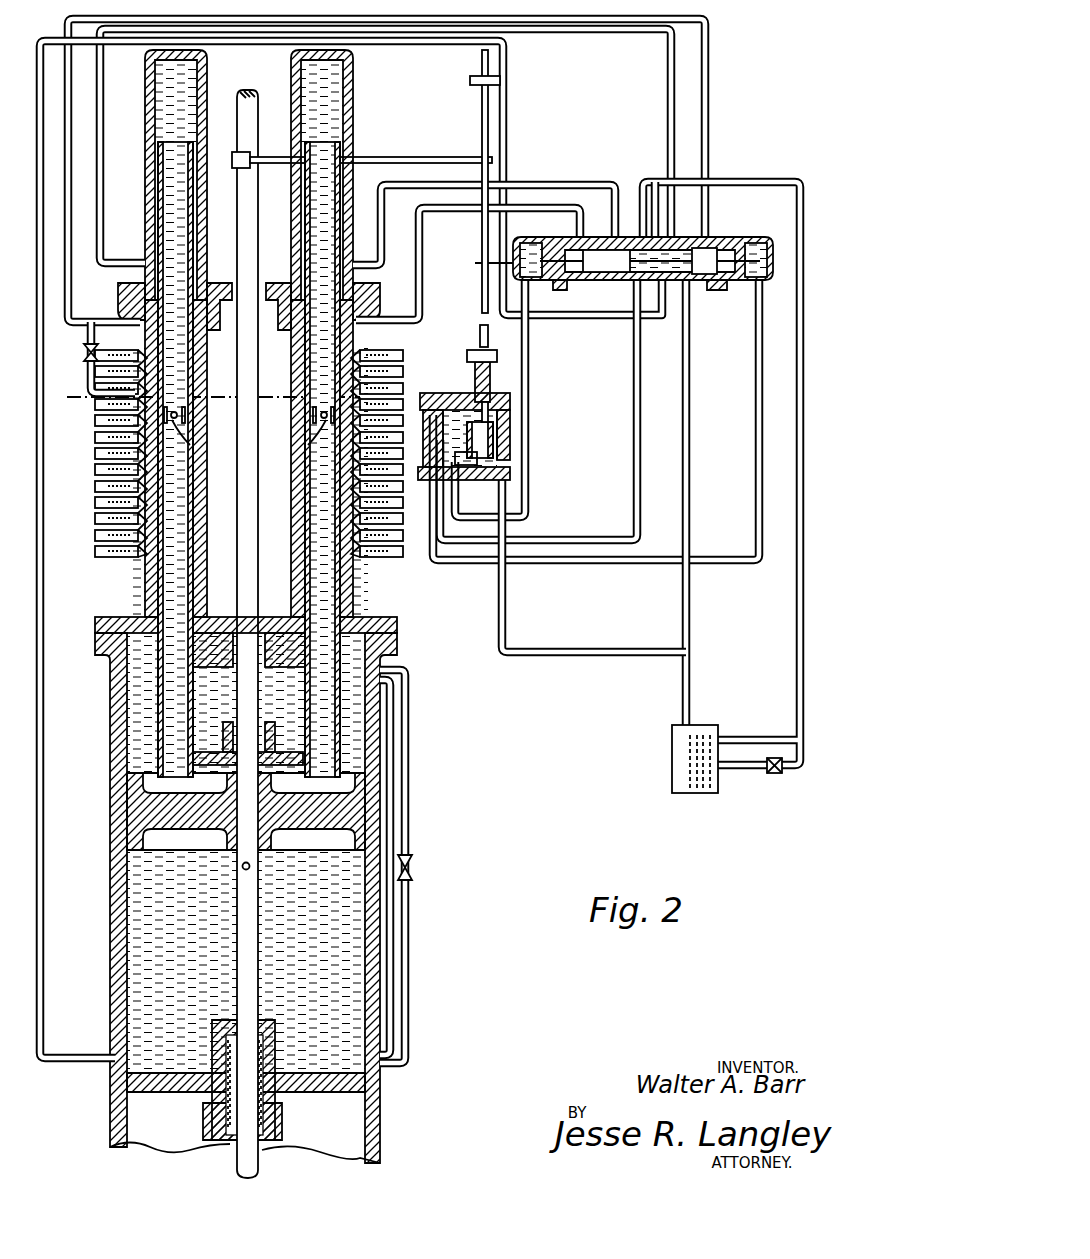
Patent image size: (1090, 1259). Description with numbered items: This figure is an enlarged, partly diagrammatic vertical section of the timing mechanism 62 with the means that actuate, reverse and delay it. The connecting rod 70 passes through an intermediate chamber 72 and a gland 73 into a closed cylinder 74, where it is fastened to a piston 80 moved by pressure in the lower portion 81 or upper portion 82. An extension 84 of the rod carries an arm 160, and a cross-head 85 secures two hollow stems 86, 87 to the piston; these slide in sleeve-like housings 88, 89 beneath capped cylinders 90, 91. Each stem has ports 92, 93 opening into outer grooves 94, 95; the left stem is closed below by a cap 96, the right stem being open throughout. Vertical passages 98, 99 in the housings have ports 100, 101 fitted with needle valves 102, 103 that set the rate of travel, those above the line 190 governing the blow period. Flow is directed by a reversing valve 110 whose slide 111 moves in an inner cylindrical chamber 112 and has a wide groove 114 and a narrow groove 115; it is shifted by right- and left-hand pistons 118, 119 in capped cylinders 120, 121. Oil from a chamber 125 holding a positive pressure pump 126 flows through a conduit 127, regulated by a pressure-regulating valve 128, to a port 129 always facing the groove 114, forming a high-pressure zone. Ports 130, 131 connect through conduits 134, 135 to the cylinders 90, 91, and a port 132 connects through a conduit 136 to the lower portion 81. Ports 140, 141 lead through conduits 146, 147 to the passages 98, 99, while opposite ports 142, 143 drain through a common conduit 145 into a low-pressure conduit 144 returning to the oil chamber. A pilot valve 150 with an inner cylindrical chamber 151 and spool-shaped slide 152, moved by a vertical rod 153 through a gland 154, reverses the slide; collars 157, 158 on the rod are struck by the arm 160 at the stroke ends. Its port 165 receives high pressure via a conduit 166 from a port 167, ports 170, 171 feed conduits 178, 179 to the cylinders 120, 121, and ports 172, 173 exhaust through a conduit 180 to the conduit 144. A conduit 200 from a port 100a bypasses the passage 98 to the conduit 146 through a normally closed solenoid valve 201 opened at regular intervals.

The timing mechanism 62 is at (227, 898).
The connecting rod 70 is at (240, 1168).
The intermediate chamber 72 is at (345, 1148).
The gland 73 is at (290, 1140).
The closed cylinder 74 is at (112, 940).
The piston 80 is at (365, 830).
The lower portion 81 is at (360, 915).
The upper portion 82 is at (303, 757).
The extension 84 is at (248, 98).
The cross-head 85 is at (275, 740).
The hollow stem 86 is at (192, 218).
The hollow stem 87 is at (302, 215).
The sleeve-like housing 88 is at (205, 522).
The sleeve-like housing 89 is at (295, 522).
The capped cylinder 90 is at (200, 112).
The capped cylinder 91 is at (297, 118).
The ports 92 is at (190, 445).
The ports 93 is at (308, 445).
The groove 94 is at (186, 413).
The groove 95 is at (311, 413).
The cap 96 is at (160, 762).
The vertical passage 98 is at (135, 592).
The vertical passage 99 is at (375, 606).
The ports 100 is at (150, 353).
The port 100a is at (148, 375).
The ports 101 is at (350, 353).
The needle valves 102 is at (95, 475).
The needle valves 103 is at (405, 555).
The reversing valve 110 is at (648, 274).
The slide 111 is at (760, 210).
The inner cylindrical chamber 112 is at (615, 230).
The wide groove 114 is at (706, 182).
The narrow groove 115 is at (672, 250).
The right-hand piston 118 is at (775, 270).
The left-hand piston 119 is at (535, 282).
The capped cylinder 120 is at (745, 255).
The capped cylinder 121 is at (475, 263).
The oil chamber 125 is at (676, 778).
The positive pressure pump 126 is at (702, 780).
The conduit 127 is at (798, 190).
The pressure-regulating valve 128 is at (778, 775).
The port 129 is at (648, 230).
The port 130 is at (668, 236).
The port 131 is at (620, 235).
The port 132 is at (641, 300).
The conduit 134 is at (668, 98).
The conduit 135 is at (522, 182).
The conduit 136 is at (43, 568).
The port 140 is at (698, 248).
The port 141 is at (570, 240).
The port 142 is at (715, 288).
The port 143 is at (600, 282).
The low-pressure conduit 144 is at (692, 350).
The common conduit 145 is at (572, 318).
The conduit 146 is at (708, 110).
The conduit 147 is at (462, 205).
The pilot valve 150 is at (555, 448).
The inner cylindrical chamber 151 is at (498, 418).
The spool-shaped slide 152 is at (493, 435).
The vertical rod 153 is at (482, 125).
The gland 154 is at (467, 357).
The collar 157 is at (480, 333).
The collar 158 is at (470, 81).
The arm 160 is at (385, 160).
The port 165 is at (480, 458).
The conduit 166 is at (636, 416).
The port 167 is at (640, 345).
The port 170 is at (470, 396).
The port 171 is at (478, 480).
The port 172 is at (510, 400).
The port 173 is at (495, 462).
The conduit 178 is at (757, 390).
The conduit 179 is at (527, 370).
The conduit 180 is at (628, 648).
The line 190 is at (108, 402).
The conduit 200 is at (92, 390).
The solenoid valve 201 is at (86, 348).